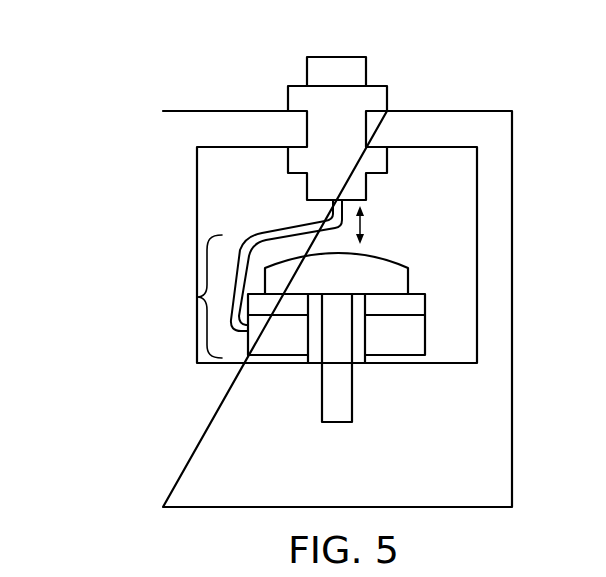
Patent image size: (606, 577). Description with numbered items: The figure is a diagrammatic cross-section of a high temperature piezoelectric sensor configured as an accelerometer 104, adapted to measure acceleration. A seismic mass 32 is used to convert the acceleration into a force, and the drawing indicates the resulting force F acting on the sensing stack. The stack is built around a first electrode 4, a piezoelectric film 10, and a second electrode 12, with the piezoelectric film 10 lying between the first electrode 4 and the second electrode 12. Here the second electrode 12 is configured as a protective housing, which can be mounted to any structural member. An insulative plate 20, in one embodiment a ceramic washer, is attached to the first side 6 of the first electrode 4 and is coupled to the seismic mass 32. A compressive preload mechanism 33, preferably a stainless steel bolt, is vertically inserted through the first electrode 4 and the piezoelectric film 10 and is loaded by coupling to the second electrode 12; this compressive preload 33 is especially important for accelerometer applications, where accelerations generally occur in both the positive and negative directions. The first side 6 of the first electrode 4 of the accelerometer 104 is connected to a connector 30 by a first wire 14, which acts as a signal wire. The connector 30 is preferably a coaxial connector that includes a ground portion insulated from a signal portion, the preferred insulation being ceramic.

The accelerometer 104 is at (112, 86).
The second electrode 12 is at (507, 472).
The first electrode 4 is at (240, 350).
The connector 30 is at (387, 97).
The first wire 14 is at (268, 224).
The force F is at (366, 222).
The preload mechanism 33 is at (397, 263).
The insulative plate 20 is at (425, 302).
The first side 6 is at (425, 315).
The piezoelectric film 10 is at (427, 355).
The seismic mass 32 is at (197, 297).